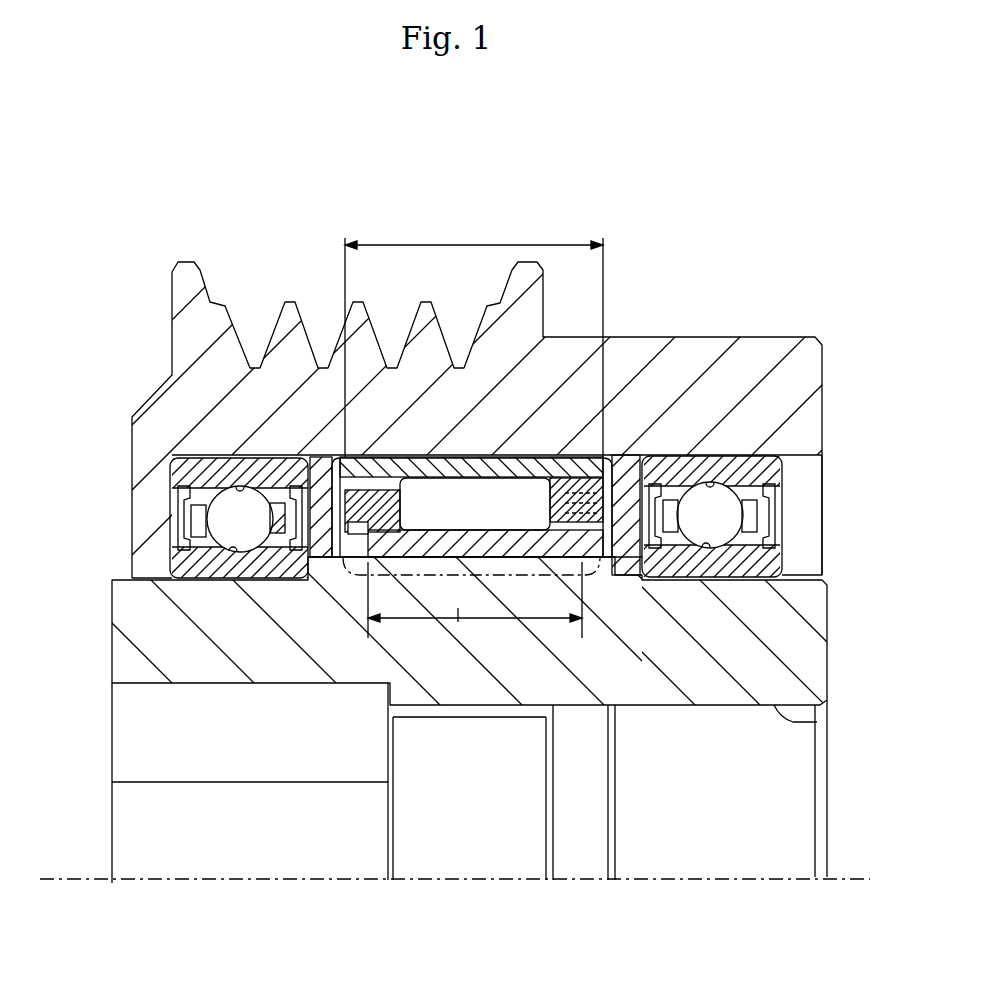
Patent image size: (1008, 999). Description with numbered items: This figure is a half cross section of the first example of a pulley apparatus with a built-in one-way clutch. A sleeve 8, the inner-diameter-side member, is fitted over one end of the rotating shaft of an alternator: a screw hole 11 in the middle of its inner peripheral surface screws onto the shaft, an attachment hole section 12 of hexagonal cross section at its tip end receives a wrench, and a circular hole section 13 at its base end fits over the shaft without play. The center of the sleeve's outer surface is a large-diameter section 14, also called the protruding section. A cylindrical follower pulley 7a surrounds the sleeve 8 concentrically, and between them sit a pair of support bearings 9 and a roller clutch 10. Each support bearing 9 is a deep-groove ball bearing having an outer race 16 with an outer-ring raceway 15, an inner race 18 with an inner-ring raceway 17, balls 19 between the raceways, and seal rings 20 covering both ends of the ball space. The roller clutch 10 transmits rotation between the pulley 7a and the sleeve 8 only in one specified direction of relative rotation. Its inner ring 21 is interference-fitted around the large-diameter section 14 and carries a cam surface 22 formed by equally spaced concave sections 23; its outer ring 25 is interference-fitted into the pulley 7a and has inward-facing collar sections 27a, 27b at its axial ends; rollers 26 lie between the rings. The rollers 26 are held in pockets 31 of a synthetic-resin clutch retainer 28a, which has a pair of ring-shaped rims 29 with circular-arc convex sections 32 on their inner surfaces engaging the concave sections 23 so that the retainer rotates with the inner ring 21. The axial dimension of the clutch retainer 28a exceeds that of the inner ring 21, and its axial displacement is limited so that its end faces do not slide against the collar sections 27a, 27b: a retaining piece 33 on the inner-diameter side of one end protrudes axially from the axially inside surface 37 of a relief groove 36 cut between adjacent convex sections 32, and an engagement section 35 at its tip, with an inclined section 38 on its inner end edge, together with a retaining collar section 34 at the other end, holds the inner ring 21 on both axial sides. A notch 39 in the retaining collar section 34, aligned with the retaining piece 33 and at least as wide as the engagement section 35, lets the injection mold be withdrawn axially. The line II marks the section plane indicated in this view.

The follower pulley 7a is at (772, 347).
The sleeve 8 is at (747, 693).
The support bearings 9 is at (504, 499).
The roller clutch 10 is at (503, 488).
The screw hole 11 is at (436, 718).
The attachment hole section 12 is at (153, 683).
The circular hole section 13 is at (818, 736).
The large-diameter section 14 is at (430, 556).
The outer-ring raceway 15 is at (237, 487).
The outer race 16 is at (175, 440).
The inner-ring raceway 17 is at (240, 578).
The inner race 18 is at (175, 570).
The balls 19 is at (182, 534).
The seal rings 20 is at (178, 503).
The inner ring for the clutch 21 is at (507, 557).
The cam surface 22 is at (455, 530).
The concave sections 23 is at (538, 528).
The outer ring for the clutch 25 is at (433, 440).
The rollers 26 is at (457, 470).
The collar section 27a is at (292, 478).
The collar section 27b is at (655, 450).
The clutch retainer 28a is at (375, 457).
The rims 29 is at (552, 456).
The pockets 31 is at (398, 456).
The convex sections 32 is at (400, 560).
The retaining piece 33 is at (624, 580).
The retaining collar section 34 is at (360, 590).
The engagement section 35 is at (602, 557).
The relief groove 36 is at (620, 456).
The axially inside surface 37 is at (585, 456).
The inclined section 38 is at (620, 558).
The notch 39 is at (347, 576).
The section line II is at (330, 440).